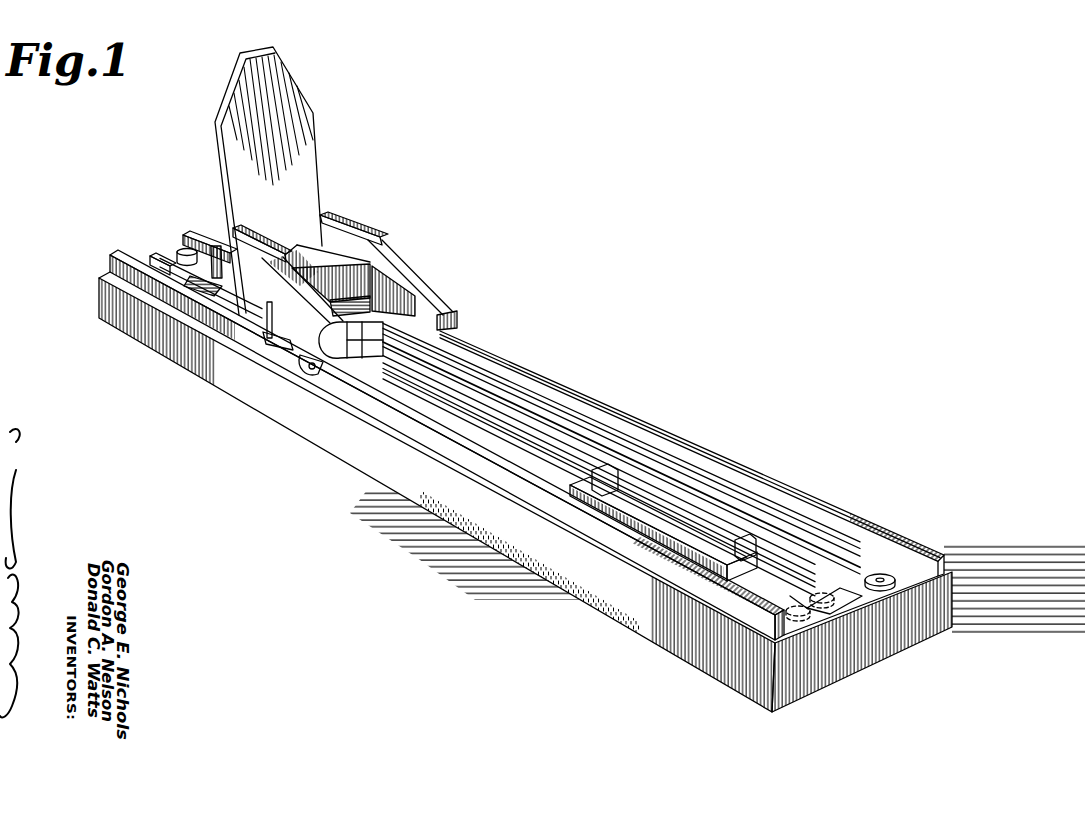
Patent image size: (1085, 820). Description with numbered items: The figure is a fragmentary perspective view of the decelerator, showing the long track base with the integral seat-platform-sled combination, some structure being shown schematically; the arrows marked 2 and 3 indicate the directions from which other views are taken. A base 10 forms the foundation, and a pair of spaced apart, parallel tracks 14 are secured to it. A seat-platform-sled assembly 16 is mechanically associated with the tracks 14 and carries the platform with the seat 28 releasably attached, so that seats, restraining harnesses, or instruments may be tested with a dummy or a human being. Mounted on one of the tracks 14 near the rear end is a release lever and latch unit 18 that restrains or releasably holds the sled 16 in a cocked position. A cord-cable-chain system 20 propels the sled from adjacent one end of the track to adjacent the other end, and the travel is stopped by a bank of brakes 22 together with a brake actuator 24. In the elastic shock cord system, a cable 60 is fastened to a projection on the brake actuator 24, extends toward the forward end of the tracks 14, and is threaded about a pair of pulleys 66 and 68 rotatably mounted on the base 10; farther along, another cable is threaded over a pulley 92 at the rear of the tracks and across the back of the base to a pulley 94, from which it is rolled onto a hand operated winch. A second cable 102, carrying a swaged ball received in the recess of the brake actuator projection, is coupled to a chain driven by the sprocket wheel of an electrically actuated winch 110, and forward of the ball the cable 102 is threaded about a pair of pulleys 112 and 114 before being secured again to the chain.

The base 10 is at (712, 664).
The tracks 14 is at (683, 575).
The seat-platform-sled assembly 16 is at (392, 254).
The release lever and latch unit 18 is at (272, 347).
The cord-cable-chain system 20 is at (825, 582).
The bank of brakes 22 is at (585, 466).
The brake actuator 24 is at (375, 342).
The seat 28 is at (300, 167).
The cable 60 is at (440, 397).
The pulley 66 is at (806, 592).
The pulley 68 is at (793, 605).
The pulley 92 is at (162, 261).
The pulley 94 is at (176, 252).
The cable 102 is at (440, 390).
The electrically actuated winch 110 is at (215, 250).
The pulley 112 is at (848, 587).
The pulley 114 is at (900, 541).
The section line FIG. 2 is at (555, 283).
The section line FIG. 3 is at (582, 377).